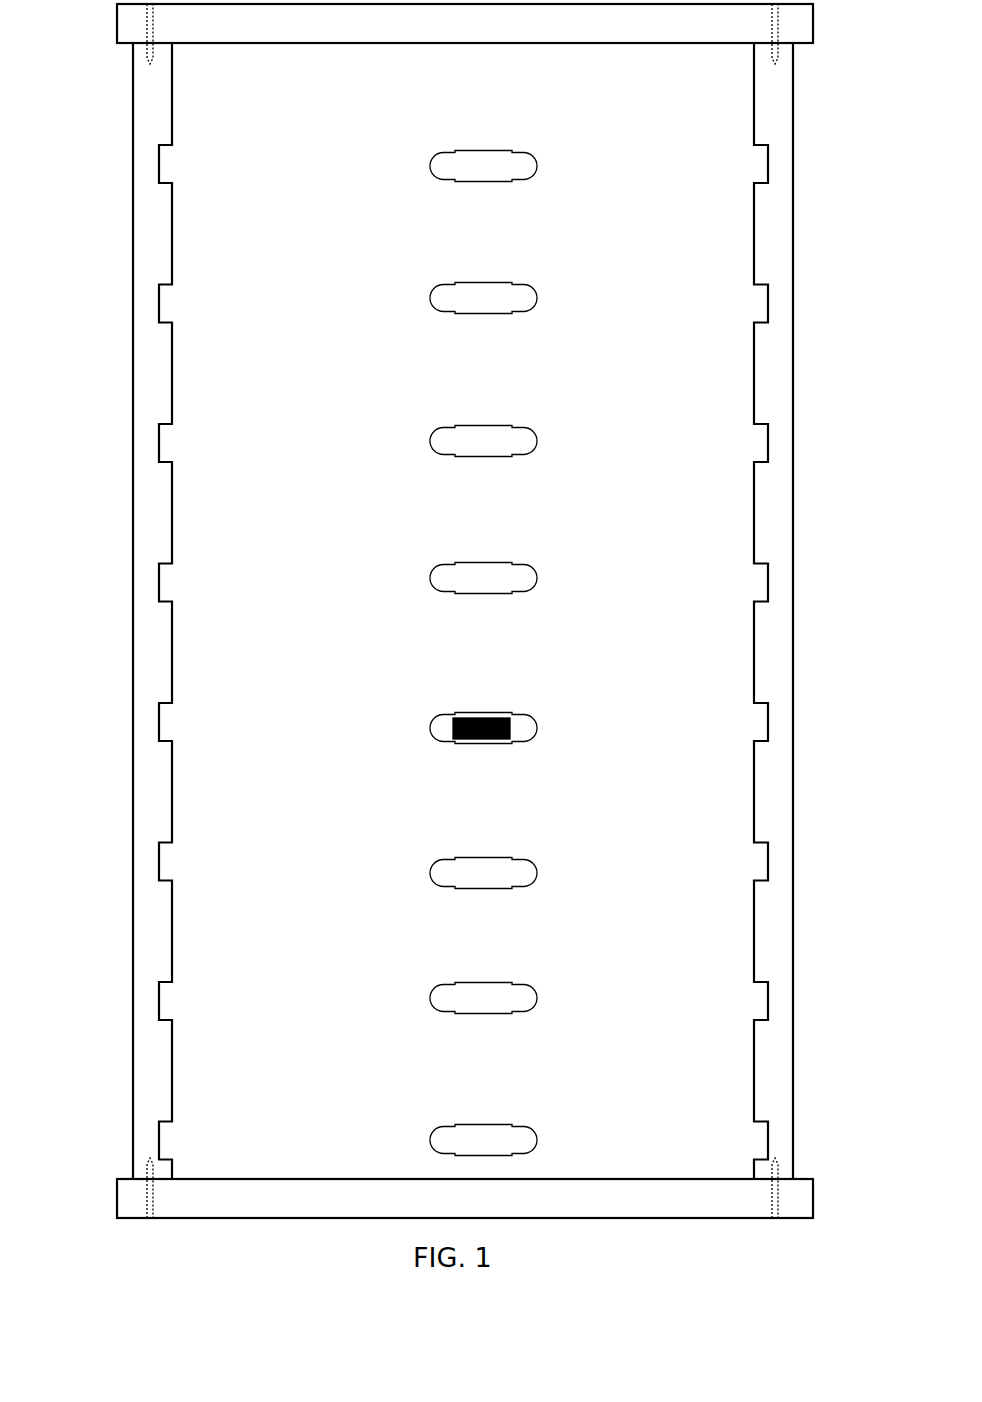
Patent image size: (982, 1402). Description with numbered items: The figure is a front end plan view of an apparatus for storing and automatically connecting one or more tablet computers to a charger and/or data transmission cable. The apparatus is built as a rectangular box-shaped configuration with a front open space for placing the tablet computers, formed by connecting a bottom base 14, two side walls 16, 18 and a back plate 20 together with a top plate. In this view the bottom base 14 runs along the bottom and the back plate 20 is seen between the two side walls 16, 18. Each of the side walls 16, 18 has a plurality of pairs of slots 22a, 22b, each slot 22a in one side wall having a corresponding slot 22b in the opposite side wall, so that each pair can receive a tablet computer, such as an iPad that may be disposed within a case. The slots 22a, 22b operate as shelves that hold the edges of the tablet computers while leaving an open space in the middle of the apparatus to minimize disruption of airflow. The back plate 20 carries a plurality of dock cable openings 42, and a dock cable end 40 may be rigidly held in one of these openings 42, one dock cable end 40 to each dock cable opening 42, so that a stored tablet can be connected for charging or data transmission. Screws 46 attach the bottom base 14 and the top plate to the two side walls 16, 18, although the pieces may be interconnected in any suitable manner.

The bottom base 14 is at (462, 1211).
The side wall 16 is at (768, 360).
The side wall 18 is at (157, 351).
The back plate 20 is at (486, 36).
The slots 22a is at (766, 164).
The slots 22b is at (160, 164).
The dock cable end 40 is at (518, 727).
The dock cable openings 42 is at (433, 164).
The screws 46 is at (152, 25).